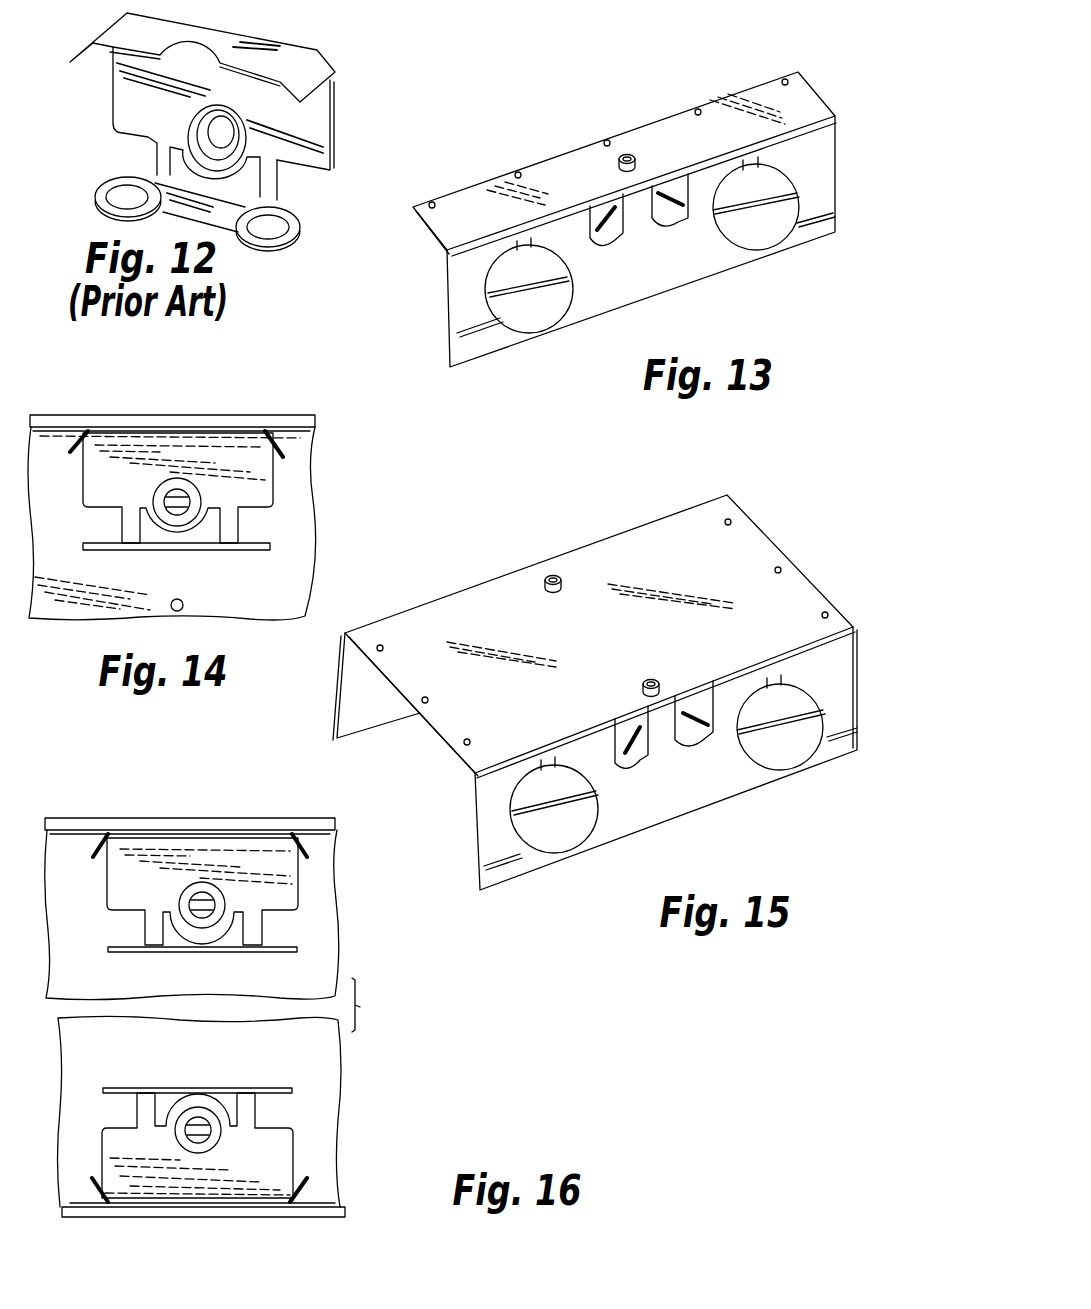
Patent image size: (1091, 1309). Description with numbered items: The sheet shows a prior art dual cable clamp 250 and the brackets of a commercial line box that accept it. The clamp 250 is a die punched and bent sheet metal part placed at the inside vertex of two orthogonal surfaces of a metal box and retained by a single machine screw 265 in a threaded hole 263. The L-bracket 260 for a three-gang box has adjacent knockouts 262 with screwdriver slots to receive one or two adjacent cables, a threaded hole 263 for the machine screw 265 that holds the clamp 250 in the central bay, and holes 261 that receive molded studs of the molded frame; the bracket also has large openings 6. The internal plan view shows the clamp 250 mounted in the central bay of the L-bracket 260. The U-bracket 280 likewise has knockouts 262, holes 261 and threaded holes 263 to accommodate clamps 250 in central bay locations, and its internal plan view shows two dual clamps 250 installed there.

In FIG. 13, the hole 6 is at (537, 312).
In FIG. 15, the hole 6 is at (546, 830).
In FIG. 12, the clamp 250 is at (350, 51).
In FIG. 14, the clamp 250 is at (292, 492).
In FIG. 16, the clamp 250 is at (312, 894).
In FIG. 13, the L-bracket 260 is at (529, 133).
In FIG. 14, the L-bracket 260 is at (142, 415).
In FIG. 16, the L-bracket 260 is at (163, 818).
In FIG. 13, the holes 261 is at (784, 72).
In FIG. 14, the holes 261 is at (185, 603).
In FIG. 15, the holes 261 is at (732, 515).
In FIG. 13, the knockouts 262 is at (673, 218).
In FIG. 14, the knockouts 262 is at (45, 418).
In FIG. 15, the knockouts 262 is at (707, 738).
In FIG. 16, the knockouts 262 is at (68, 818).
In FIG. 13, the threaded hole 263 is at (628, 154).
In FIG. 15, the threaded hole 263 is at (553, 575).
In FIG. 14, the machine screw 265 is at (186, 495).
In FIG. 16, the machine screw 265 is at (205, 897).
In FIG. 15, the U-bracket 280 is at (471, 554).
In FIG. 16, the U-bracket 280 is at (371, 1003).